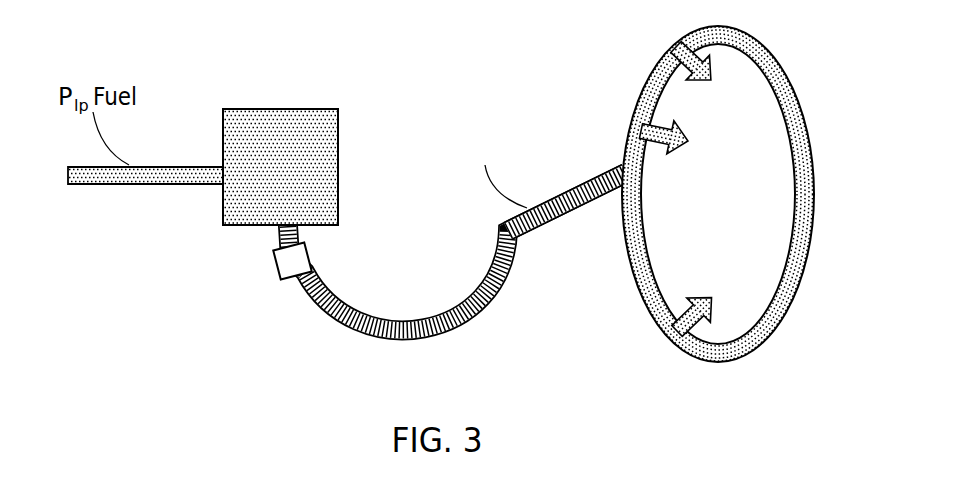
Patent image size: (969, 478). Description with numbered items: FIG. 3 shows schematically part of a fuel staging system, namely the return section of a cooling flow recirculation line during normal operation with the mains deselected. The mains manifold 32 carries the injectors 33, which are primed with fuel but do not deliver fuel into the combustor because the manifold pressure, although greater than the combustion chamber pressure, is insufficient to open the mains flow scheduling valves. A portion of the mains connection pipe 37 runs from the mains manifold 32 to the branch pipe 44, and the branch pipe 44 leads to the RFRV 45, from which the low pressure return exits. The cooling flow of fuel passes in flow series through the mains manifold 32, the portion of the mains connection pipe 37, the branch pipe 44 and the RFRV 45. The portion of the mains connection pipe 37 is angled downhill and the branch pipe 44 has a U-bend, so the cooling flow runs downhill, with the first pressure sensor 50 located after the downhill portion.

The mains manifold 32 is at (797, 92).
The injectors 33 is at (710, 300).
The mains connection pipe 37 is at (559, 200).
The branch pipe 44 is at (340, 322).
The RFRV 45 is at (287, 108).
The first pressure sensor 50 is at (270, 267).